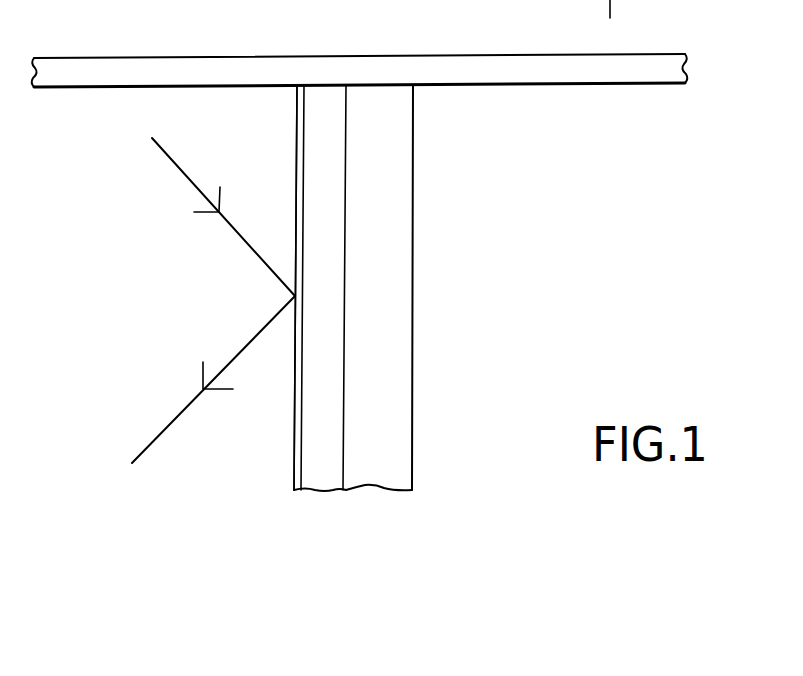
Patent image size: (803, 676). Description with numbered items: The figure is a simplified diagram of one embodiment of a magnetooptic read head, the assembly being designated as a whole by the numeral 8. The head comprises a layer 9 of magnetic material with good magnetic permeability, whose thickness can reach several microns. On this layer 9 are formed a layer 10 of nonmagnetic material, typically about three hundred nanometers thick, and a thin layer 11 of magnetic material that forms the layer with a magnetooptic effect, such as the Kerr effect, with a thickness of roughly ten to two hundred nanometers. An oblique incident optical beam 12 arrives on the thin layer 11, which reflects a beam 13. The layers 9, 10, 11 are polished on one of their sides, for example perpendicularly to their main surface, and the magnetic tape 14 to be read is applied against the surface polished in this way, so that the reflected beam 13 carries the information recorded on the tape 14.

The structural assembly 8 is at (126, 369).
The layer of magnetic material 9 is at (398, 176).
The layer of nonmagnetic material 10 is at (317, 418).
The thin layer of magnetic material 11 is at (300, 152).
The oblique incident optical beam 12 is at (177, 167).
The reflected beam 13 is at (183, 410).
The magnetic tape 14 is at (230, 72).